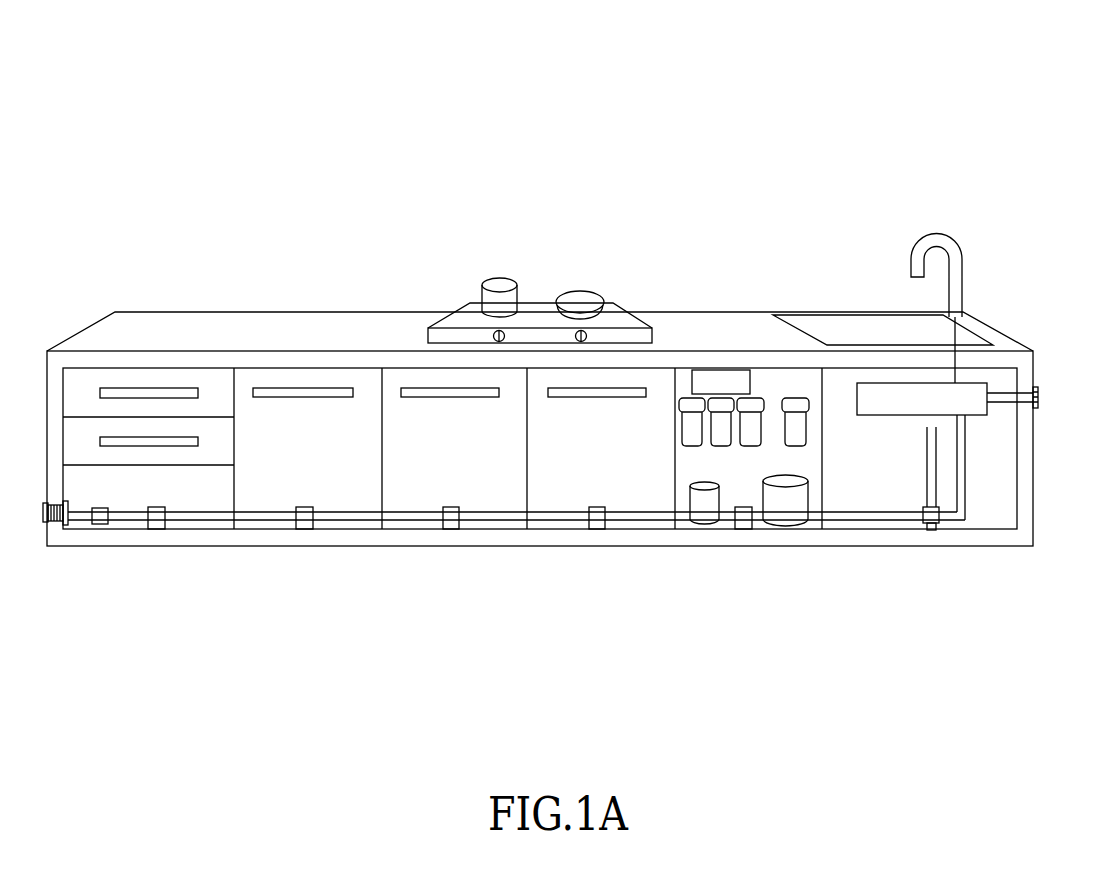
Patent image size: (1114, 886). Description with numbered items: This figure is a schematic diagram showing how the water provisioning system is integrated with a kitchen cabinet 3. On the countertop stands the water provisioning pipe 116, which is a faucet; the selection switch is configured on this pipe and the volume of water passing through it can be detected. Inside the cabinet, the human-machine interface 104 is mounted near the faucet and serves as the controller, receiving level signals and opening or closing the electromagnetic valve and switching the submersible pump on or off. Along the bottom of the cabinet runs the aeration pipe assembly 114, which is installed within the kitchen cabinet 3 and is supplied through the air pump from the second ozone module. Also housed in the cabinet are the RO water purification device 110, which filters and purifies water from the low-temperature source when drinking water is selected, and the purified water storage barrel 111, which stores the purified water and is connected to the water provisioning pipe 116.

The kitchen cabinet 3 is at (562, 233).
The water provisioning pipe 116 is at (935, 243).
The human-machine interface (HMI) 104 is at (977, 390).
The aeration pipe assembly 114 is at (487, 517).
The RO water purification device 110 is at (703, 505).
The purified water storage barrel 111 is at (783, 503).